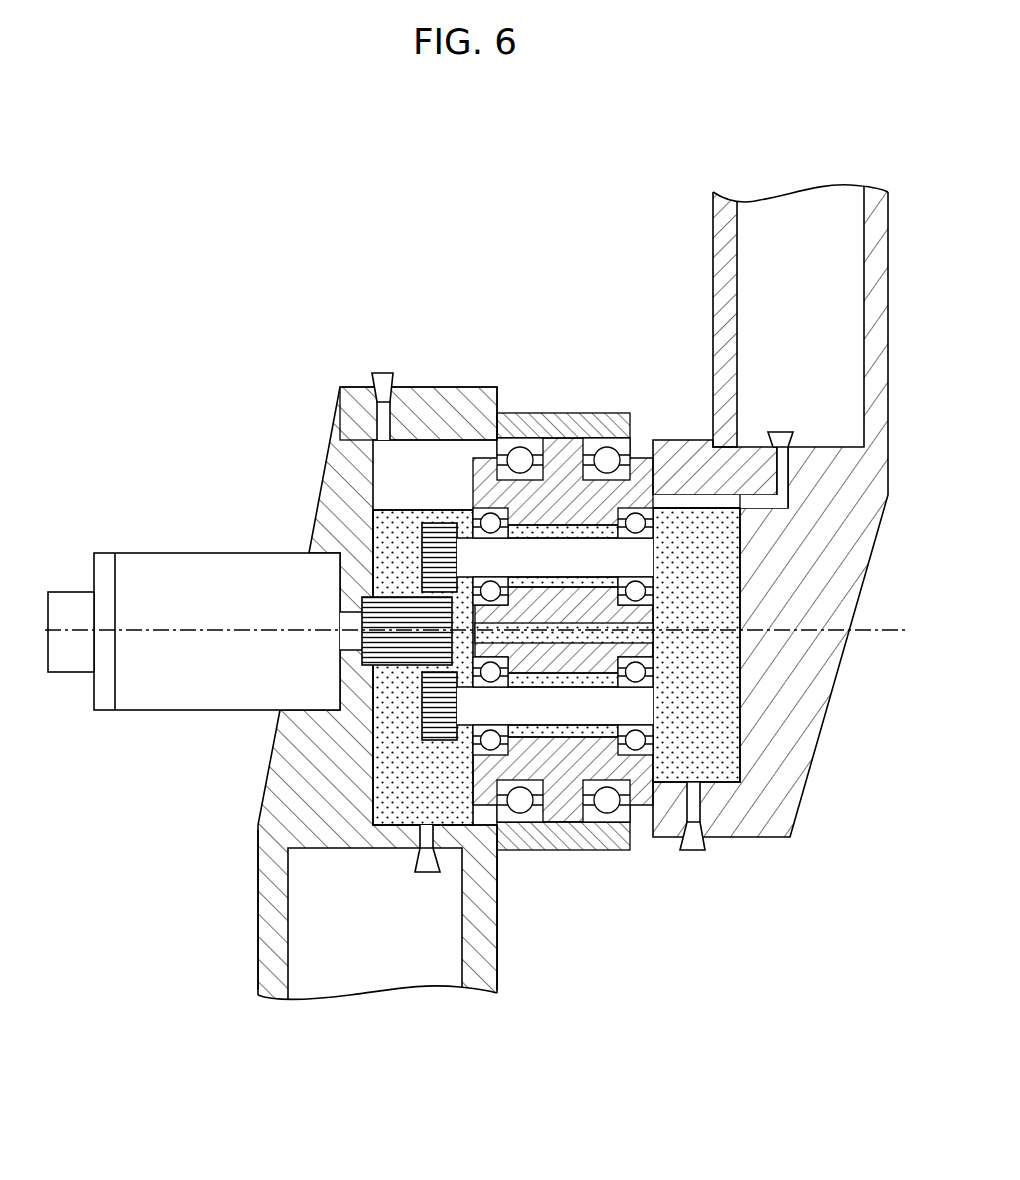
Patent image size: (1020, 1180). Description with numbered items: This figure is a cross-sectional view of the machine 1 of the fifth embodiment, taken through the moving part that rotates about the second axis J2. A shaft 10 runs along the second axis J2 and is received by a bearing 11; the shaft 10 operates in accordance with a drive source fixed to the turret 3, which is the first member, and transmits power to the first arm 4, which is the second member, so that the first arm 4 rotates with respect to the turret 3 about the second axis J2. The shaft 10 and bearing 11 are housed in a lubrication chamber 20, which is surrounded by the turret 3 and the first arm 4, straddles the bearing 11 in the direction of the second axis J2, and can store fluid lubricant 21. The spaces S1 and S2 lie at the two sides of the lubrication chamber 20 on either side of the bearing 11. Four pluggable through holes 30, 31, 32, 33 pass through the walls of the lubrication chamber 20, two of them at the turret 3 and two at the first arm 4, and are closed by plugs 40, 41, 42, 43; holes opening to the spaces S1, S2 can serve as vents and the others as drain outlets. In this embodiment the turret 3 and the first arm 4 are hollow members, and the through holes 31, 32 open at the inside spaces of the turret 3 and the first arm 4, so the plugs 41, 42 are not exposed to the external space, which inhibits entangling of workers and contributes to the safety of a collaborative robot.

The machine 1 is at (246, 268).
The turret 3 is at (268, 916).
The first arm 4 is at (722, 250).
The shaft 10 is at (523, 557).
The bearing 11 is at (625, 757).
The lubrication chamber 20 is at (378, 478).
The fluid lubricant 21 is at (396, 510).
The through hole 30 is at (388, 442).
The through hole 31 is at (427, 827).
The through hole 32 is at (684, 492).
The through hole 33 is at (680, 784).
The plug 40 is at (385, 373).
The plug 41 is at (427, 872).
The plug 42 is at (780, 430).
The plug 43 is at (700, 852).
The space S1 is at (405, 790).
The space S2 is at (701, 756).
The second axis J2 is at (868, 598).